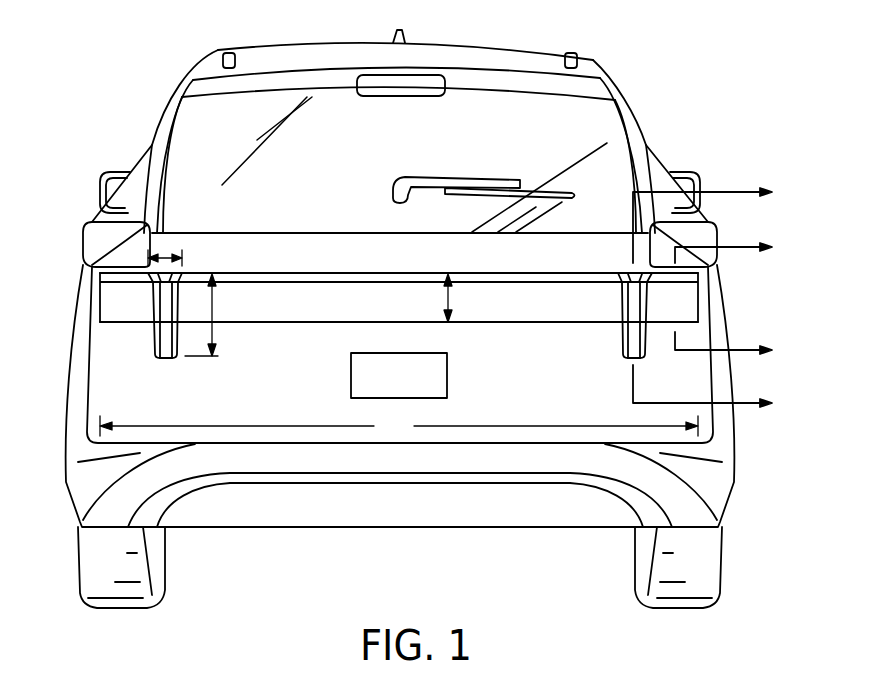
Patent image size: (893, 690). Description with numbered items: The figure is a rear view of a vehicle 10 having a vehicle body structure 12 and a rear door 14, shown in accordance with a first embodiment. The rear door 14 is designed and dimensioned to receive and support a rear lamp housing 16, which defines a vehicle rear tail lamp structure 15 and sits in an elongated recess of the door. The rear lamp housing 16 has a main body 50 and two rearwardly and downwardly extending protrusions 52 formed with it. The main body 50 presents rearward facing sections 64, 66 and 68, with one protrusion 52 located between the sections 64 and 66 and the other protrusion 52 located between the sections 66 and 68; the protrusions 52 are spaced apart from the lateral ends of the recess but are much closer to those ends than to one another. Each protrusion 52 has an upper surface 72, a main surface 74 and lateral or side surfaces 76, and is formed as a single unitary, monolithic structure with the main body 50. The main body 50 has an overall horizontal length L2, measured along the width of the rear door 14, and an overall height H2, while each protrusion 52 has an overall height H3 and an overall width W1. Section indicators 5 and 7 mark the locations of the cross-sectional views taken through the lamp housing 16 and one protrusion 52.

The vehicle 10 is at (240, 32).
The vehicle body structure 12 is at (612, 63).
The rear door 14 is at (125, 385).
The vehicle rear tail lamp structure 15 is at (308, 262).
The rear lamp housing 16 is at (289, 335).
The main body 50 is at (518, 300).
The protrusions 52 is at (160, 343).
The rearward facing section 64 is at (122, 302).
The rearward facing section 66 is at (333, 303).
The rearward facing section 68 is at (680, 298).
The upper surface 72 is at (627, 273).
The main surface 74 is at (632, 300).
The side surfaces 76 is at (620, 310).
The section line 5- 5 is at (714, 300).
The section line 7- 7 is at (735, 300).
The overall width W1 is at (166, 252).
The overall height H2 is at (451, 297).
The overall height H3 is at (214, 298).
The overall horizontal length L2 is at (399, 422).